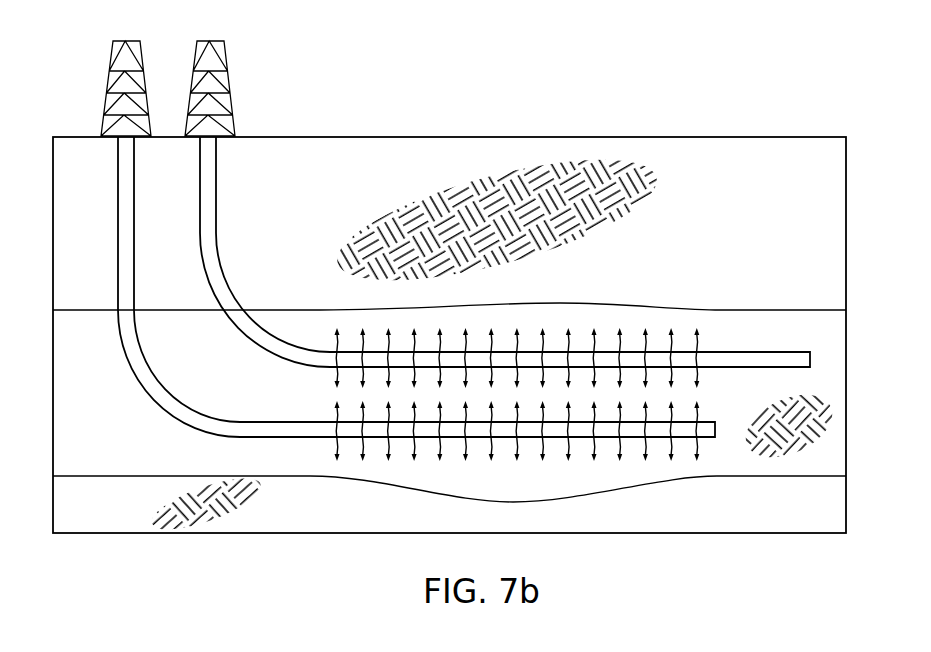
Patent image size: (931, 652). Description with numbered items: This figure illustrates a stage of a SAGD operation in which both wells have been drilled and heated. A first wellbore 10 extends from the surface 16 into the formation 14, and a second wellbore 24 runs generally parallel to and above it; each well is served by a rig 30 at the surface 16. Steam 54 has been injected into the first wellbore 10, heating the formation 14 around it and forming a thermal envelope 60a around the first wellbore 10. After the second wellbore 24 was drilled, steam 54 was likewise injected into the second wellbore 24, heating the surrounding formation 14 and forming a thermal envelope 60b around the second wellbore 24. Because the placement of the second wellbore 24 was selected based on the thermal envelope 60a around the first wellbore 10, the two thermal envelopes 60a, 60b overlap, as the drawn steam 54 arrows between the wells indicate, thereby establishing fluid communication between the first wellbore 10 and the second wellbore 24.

The first wellbore 10 is at (143, 373).
The subterranean formation 14 is at (755, 231).
The surface 16 is at (433, 137).
The second wellbore 24 is at (212, 247).
The drilling rig 30 is at (103, 50).
The steam 54 is at (644, 332).
The thermal envelope 60a is at (573, 490).
The thermal envelope 60b is at (563, 302).